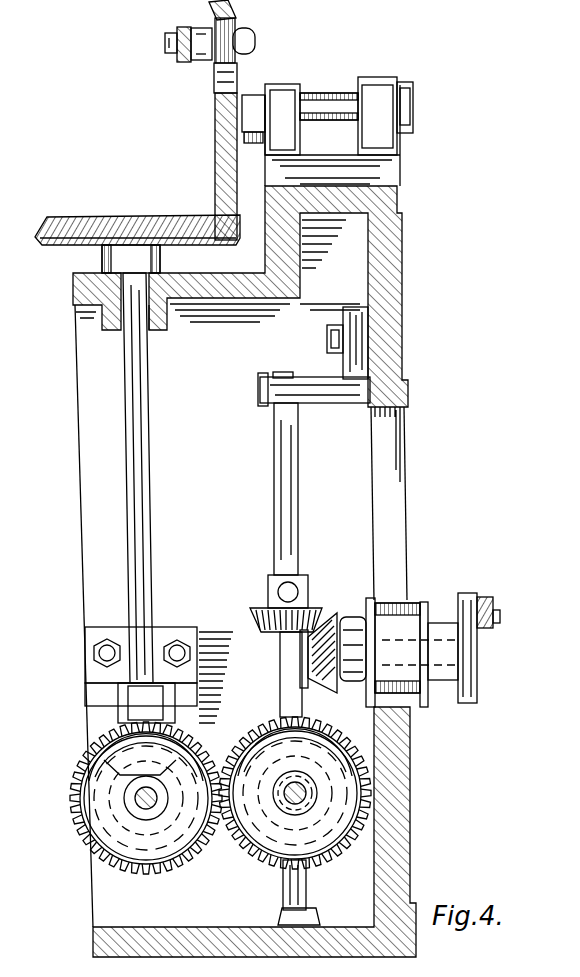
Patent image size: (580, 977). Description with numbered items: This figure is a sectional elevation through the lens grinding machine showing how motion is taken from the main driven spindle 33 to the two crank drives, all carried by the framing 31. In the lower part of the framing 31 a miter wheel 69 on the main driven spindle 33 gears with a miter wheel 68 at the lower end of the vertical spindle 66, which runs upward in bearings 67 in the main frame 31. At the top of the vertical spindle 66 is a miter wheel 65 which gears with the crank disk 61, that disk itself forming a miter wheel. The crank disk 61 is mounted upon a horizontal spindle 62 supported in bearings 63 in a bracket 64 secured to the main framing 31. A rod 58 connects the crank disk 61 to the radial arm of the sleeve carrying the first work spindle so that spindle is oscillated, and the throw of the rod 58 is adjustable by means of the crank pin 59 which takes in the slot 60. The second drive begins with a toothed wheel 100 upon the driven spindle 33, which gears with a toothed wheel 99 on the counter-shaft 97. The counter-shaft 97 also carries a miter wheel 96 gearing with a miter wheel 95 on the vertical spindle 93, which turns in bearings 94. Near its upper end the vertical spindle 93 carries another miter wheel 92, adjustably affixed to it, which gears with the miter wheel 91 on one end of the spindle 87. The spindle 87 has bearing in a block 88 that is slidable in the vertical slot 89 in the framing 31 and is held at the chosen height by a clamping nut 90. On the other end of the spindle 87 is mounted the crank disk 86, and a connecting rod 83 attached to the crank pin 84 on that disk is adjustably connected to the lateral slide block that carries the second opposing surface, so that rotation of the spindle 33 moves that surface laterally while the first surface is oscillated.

The framing 31 is at (215, 532).
The main driven spindle 33 is at (162, 812).
The rod 58 is at (188, 62).
The crank pin 59 is at (234, 30).
The slot 60 is at (240, 68).
The crank disk 61 is at (216, 161).
The horizontal spindle 62 is at (326, 108).
The bearings 63 is at (331, 116).
The bracket 64 is at (332, 173).
The miter wheel 65 is at (148, 216).
The vertical spindle 66 is at (134, 455).
The bearings 67 is at (160, 314).
The miter wheel 68 is at (78, 766).
The miter wheel 69 is at (103, 808).
The connecting rod 83 is at (484, 597).
The crank pin 84 is at (500, 618).
The crank disk 86 is at (478, 665).
The spindle 87 is at (428, 643).
The block 88 is at (403, 603).
The vertical slot 89 is at (389, 503).
The clamping nut 90 is at (352, 616).
The miter wheel 91 is at (325, 608).
The miter wheel 92 is at (268, 600).
The vertical spindle 93 is at (290, 490).
The bearings 94 is at (320, 380).
The miter wheel 95 is at (325, 753).
The miter wheel 96 is at (317, 828).
The counter-shaft 97 is at (285, 797).
The toothed wheel 99 is at (270, 848).
The toothed wheel 100 is at (145, 858).